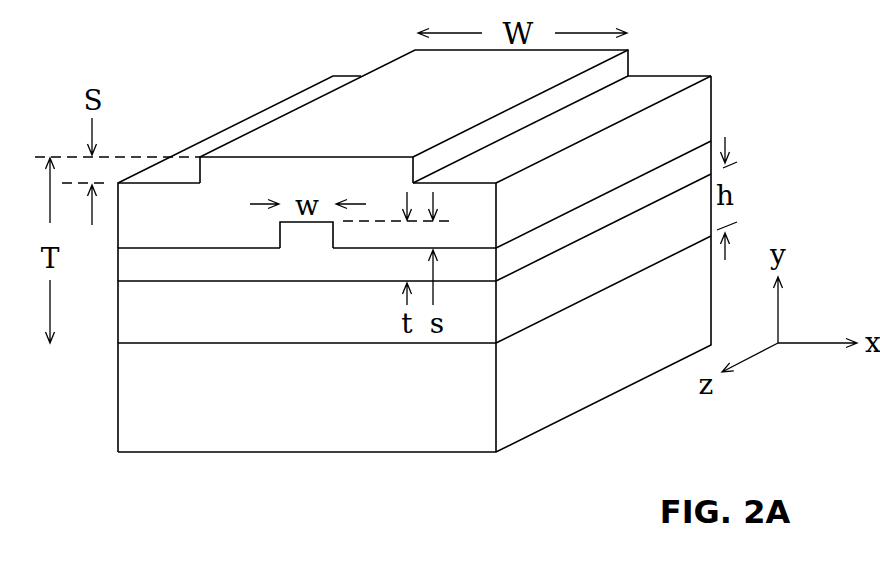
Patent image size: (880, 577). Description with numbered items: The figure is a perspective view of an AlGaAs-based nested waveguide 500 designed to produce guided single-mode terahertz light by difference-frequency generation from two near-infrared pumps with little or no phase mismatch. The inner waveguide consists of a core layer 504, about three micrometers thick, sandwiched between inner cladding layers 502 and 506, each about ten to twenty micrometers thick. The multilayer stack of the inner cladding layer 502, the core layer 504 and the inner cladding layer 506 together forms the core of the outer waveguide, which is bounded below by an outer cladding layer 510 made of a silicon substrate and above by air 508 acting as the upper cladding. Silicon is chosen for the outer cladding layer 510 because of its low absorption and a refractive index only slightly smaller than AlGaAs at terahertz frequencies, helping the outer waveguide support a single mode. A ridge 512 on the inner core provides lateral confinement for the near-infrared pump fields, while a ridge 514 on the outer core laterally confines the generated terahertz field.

The semiconductor waveguide structure 500 is at (197, 87).
The inner cladding layer 502 is at (169, 235).
The core layer 504 is at (332, 278).
The inner cladding layer 506 is at (143, 329).
The air 508 is at (274, 54).
The outer cladding layer 510 is at (256, 424).
The ridge 512 is at (292, 219).
The ridge 514 is at (424, 149).